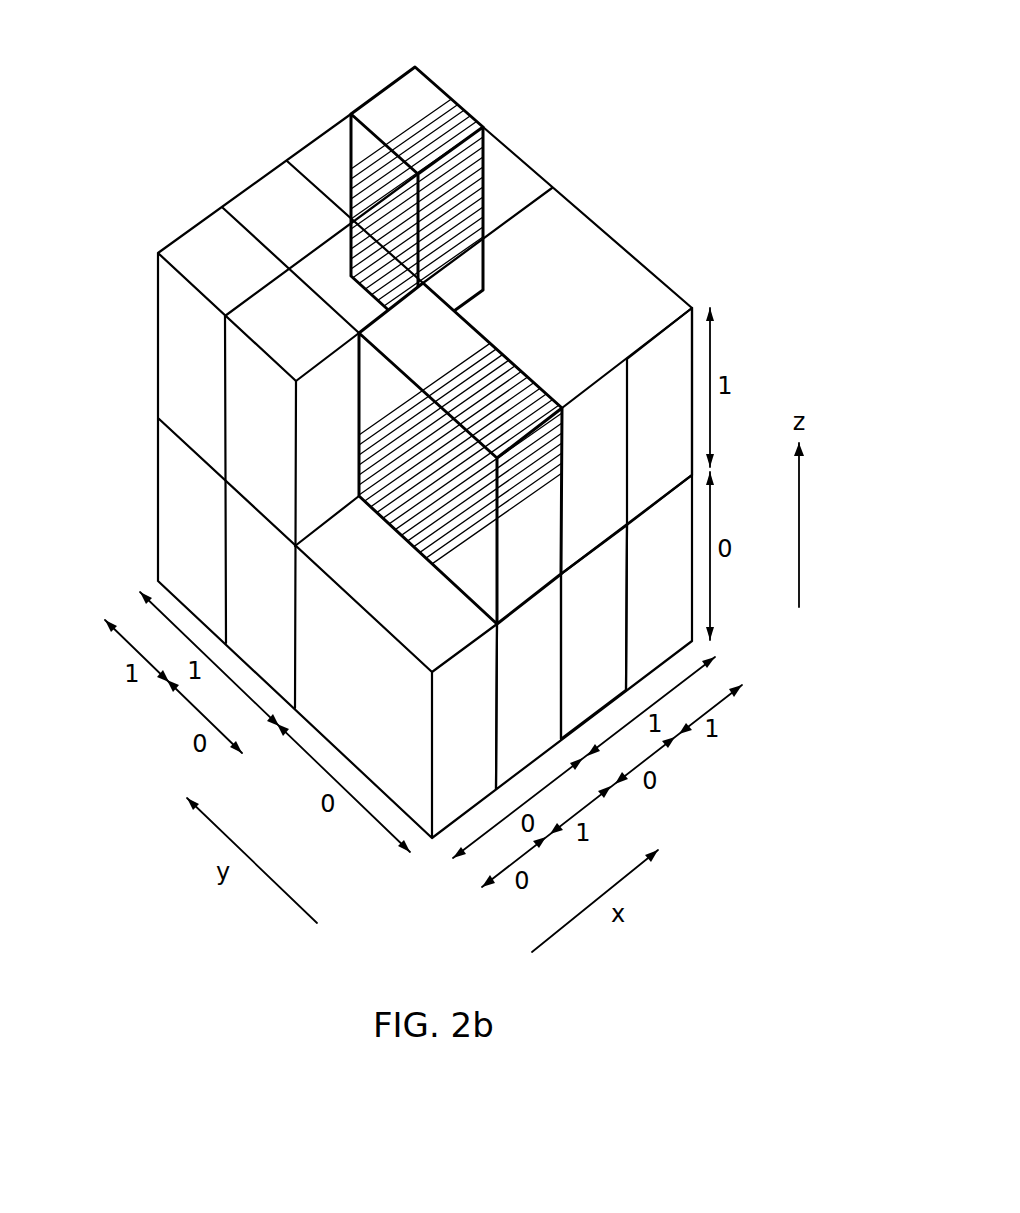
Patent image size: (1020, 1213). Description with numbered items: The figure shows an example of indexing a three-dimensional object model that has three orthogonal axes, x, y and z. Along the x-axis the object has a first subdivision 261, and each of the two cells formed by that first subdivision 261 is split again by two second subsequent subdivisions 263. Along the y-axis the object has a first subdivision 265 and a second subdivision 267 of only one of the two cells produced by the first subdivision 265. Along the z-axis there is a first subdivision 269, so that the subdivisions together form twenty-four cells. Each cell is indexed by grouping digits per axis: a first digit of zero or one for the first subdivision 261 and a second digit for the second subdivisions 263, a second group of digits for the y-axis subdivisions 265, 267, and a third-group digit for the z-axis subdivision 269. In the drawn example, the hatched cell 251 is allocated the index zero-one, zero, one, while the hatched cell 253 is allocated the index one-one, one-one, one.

The cell 251 is at (417, 512).
The cell 253 is at (428, 105).
The first subdivision 261 is at (573, 658).
The second subsequent subdivisions 263 is at (628, 652).
The first subdivision 265 is at (297, 458).
The second subdivision 267 is at (224, 572).
The first subdivision 269 is at (653, 497).